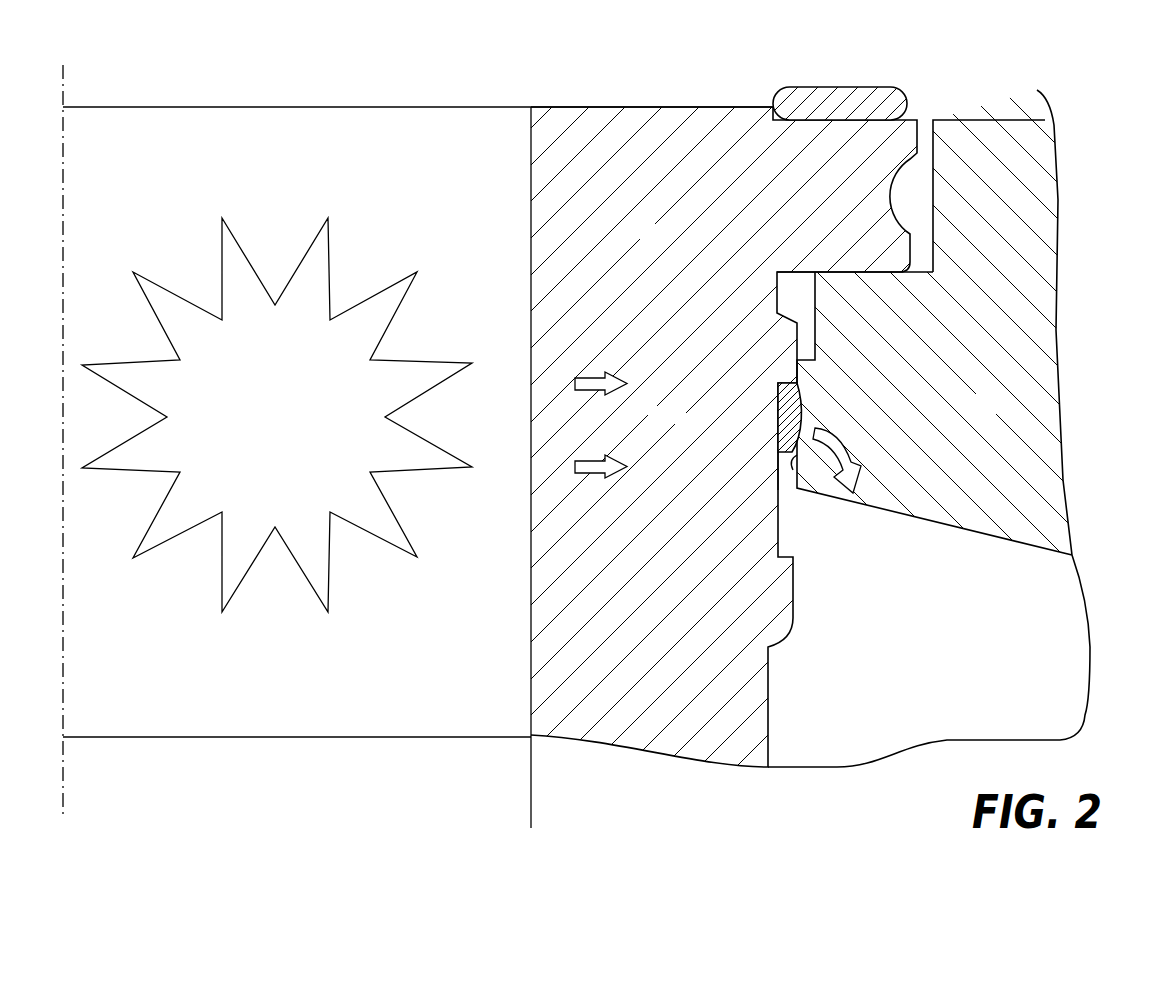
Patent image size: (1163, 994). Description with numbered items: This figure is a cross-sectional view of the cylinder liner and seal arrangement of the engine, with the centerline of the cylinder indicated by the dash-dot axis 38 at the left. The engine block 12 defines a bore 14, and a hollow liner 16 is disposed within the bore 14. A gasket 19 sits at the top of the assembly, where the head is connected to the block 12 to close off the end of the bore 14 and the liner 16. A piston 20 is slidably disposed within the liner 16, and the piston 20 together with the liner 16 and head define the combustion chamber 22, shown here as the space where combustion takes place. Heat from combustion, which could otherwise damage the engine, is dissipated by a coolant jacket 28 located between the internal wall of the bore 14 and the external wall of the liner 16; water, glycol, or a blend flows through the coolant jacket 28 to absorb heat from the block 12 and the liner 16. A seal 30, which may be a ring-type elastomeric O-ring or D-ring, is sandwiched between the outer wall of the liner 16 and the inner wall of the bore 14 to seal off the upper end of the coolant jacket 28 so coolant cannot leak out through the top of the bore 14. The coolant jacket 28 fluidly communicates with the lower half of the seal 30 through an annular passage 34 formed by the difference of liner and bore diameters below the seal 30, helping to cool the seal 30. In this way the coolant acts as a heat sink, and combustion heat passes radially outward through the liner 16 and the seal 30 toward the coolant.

The block 12 is at (994, 414).
The bore 14 is at (792, 463).
The liner 16 is at (662, 244).
The gasket 19 is at (907, 103).
The piston 20 is at (280, 772).
The combustion chamber 22 is at (280, 692).
The coolant jacket 28 is at (911, 640).
The seal 30 is at (788, 413).
The annular passage 34 is at (788, 478).
The cylinder axis 38 is at (63, 82).